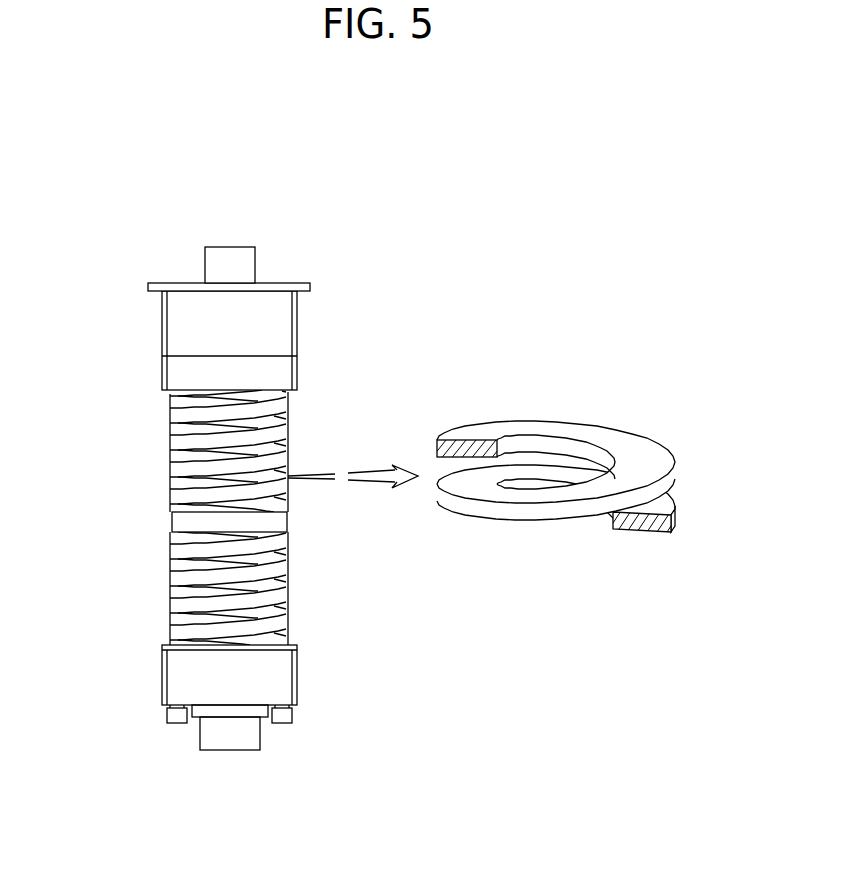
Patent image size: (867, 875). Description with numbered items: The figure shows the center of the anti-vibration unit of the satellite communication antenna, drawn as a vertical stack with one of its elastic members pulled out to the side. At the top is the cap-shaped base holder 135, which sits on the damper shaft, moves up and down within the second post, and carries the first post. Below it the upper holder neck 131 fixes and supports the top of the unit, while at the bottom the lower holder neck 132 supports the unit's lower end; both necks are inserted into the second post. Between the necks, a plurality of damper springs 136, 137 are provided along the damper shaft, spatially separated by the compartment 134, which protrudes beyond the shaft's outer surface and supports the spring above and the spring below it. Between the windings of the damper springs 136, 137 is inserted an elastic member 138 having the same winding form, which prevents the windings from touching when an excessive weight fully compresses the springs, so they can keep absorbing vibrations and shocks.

The upper holder neck 131 is at (176, 374).
The lower holder neck 132 is at (284, 672).
The compartment 134 is at (178, 522).
The base holder 135 is at (230, 255).
The damper spring 136 is at (172, 455).
The damper spring 137 is at (172, 595).
The elastic member 138 is at (628, 448).